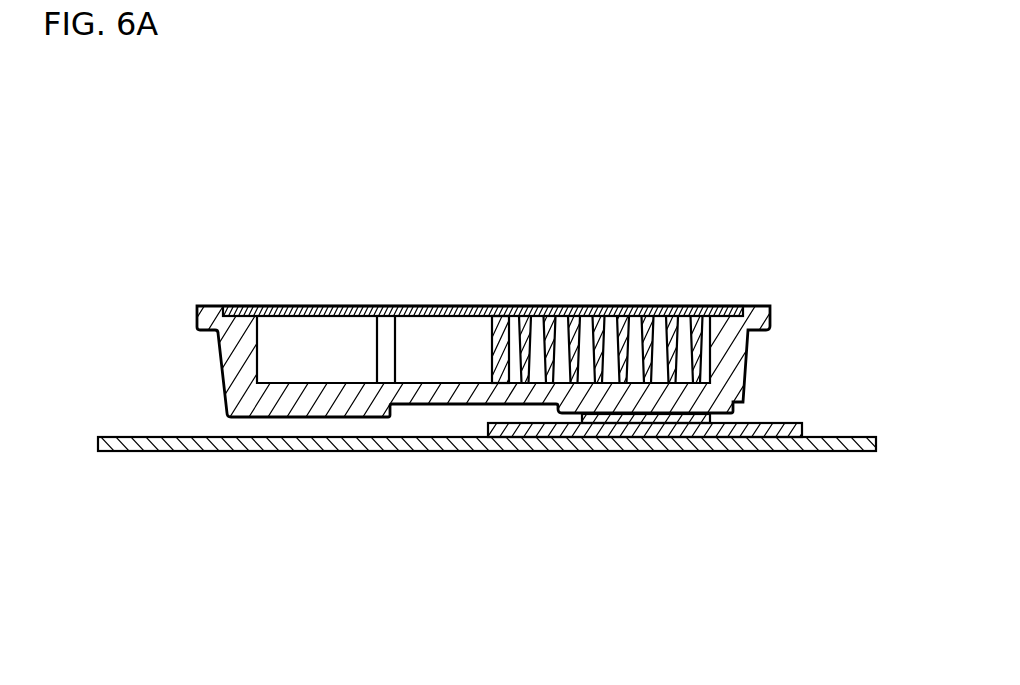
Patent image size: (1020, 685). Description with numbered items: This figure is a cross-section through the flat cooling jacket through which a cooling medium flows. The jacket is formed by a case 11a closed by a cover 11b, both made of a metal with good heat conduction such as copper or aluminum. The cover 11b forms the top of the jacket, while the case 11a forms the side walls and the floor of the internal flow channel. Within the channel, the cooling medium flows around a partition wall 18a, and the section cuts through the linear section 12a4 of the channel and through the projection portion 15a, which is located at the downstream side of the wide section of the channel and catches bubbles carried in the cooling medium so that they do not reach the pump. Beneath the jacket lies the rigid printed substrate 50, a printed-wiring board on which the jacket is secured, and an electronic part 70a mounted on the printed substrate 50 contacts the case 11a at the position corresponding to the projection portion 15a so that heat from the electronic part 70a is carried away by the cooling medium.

The case 11a is at (735, 352).
The cover 11b is at (442, 306).
The linear section 12a4 is at (343, 382).
The projection portion 15a is at (652, 306).
The partition wall 18a is at (498, 334).
The printed substrate 50 is at (308, 451).
The electronic part 70a is at (680, 425).